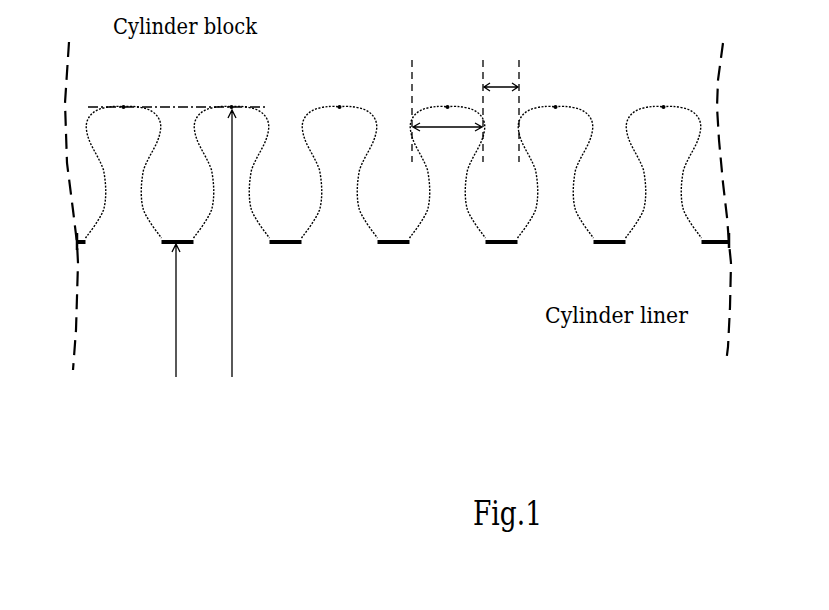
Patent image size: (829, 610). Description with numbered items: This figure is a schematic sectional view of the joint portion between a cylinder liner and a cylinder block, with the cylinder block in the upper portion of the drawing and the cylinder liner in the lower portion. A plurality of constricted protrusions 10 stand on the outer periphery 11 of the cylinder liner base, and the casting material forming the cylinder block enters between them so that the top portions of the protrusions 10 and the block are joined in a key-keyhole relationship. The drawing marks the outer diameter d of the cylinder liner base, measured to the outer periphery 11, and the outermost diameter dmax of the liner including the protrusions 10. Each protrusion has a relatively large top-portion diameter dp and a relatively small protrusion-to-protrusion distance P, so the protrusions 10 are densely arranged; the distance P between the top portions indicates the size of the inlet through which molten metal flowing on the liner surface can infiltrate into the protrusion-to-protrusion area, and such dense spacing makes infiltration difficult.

The constricted protrusion 10 is at (343, 125).
The outer periphery of the cylinder liner base 11 is at (392, 243).
The outer diameter of cylinder liner base d is at (176, 323).
The outermost diameter of cylinder liner including protrusions dmax is at (239, 256).
The diameter of the top portion of the protrusion dp is at (447, 111).
The protrusion-to-protrusion distance P is at (501, 111).